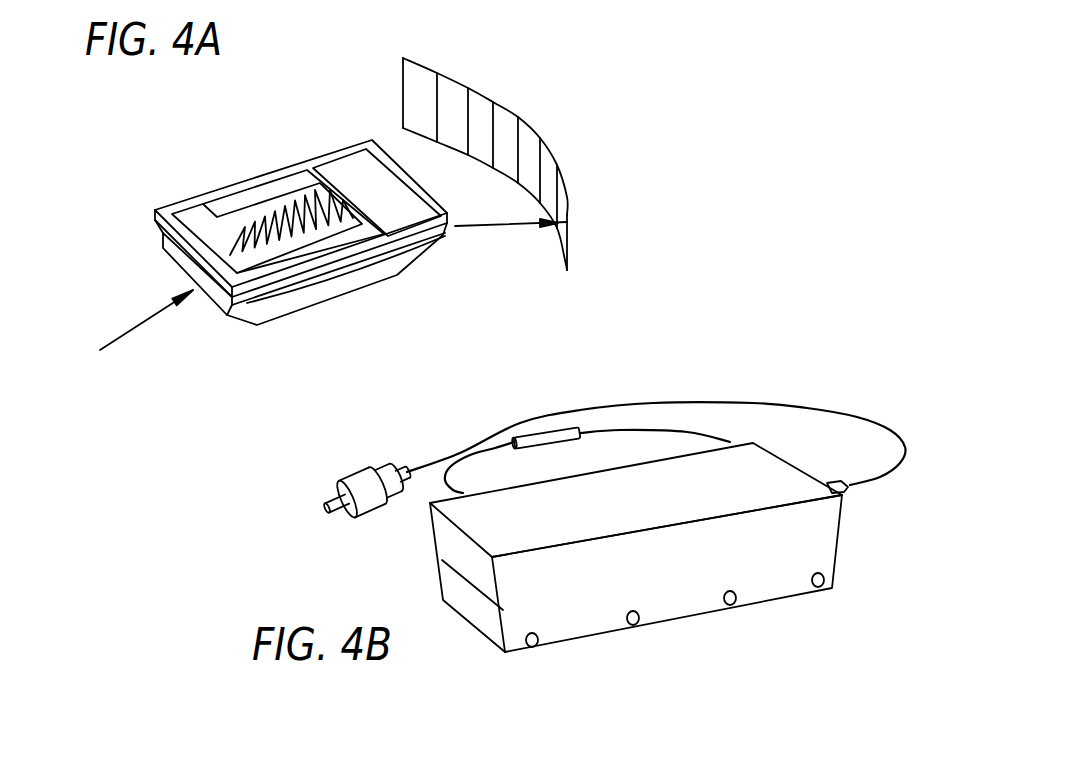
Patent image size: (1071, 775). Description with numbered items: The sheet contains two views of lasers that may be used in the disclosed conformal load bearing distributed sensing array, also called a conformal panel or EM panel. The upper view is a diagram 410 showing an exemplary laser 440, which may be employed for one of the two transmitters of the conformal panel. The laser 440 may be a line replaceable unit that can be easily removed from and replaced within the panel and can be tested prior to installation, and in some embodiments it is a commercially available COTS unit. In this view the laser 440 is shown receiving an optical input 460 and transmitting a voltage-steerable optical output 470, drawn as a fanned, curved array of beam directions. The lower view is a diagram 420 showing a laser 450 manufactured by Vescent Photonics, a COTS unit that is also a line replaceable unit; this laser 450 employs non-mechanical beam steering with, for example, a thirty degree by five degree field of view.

In FIG. 4A, the diagram 410 is at (403, 281).
In FIG. 4A, the laser 440 is at (197, 163).
In FIG. 4A, the optical input 460 is at (133, 325).
In FIG. 4A, the voltage-steerable optical output 470 is at (418, 97).
In FIG. 4B, the diagram 420 is at (733, 628).
In FIG. 4B, the laser 450 is at (753, 432).